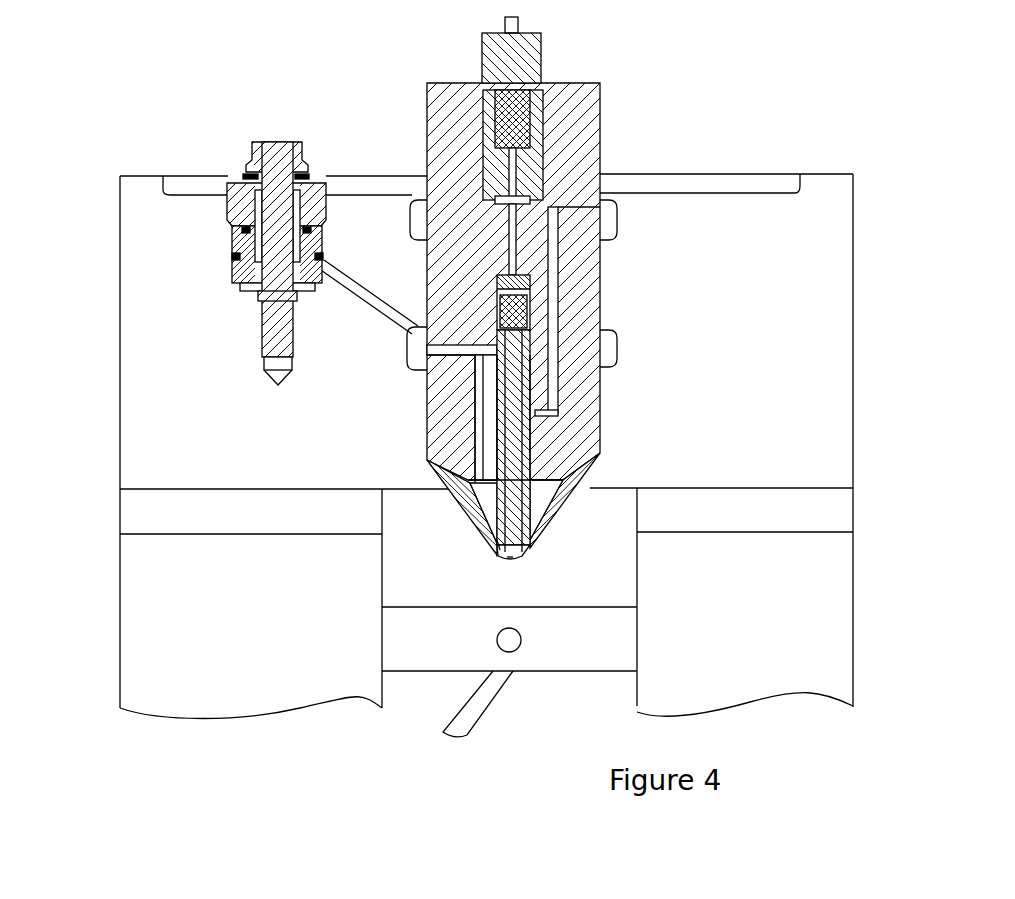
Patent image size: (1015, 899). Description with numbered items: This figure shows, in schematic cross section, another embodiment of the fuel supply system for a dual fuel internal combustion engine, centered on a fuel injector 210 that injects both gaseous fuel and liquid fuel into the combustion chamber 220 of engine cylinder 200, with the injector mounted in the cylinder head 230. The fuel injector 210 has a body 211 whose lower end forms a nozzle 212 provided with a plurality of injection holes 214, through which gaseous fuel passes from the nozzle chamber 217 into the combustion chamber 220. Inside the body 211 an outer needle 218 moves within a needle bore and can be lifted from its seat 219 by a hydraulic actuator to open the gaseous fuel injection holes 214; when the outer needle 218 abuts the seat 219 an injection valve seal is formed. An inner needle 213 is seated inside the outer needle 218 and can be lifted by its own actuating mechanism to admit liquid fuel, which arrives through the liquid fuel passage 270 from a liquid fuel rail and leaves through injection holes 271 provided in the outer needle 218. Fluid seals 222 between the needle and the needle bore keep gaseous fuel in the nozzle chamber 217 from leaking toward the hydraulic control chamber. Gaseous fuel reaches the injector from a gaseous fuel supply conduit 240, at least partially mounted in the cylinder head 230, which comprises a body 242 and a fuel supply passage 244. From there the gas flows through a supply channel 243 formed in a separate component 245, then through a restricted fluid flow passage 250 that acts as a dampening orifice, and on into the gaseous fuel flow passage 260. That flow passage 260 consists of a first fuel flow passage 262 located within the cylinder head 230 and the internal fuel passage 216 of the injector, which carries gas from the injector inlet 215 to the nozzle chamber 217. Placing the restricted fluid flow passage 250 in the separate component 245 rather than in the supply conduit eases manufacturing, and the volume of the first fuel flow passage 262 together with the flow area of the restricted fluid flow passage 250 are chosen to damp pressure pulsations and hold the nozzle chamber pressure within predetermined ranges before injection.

The engine cylinder 200 is at (855, 650).
The fuel injector 210 is at (513, 373).
The body 211 is at (600, 145).
The nozzle 212 is at (559, 505).
The inner needle 213 is at (600, 257).
The injection holes 214 is at (497, 545).
The injector inlet 215 is at (427, 352).
The internal fuel passage 216 is at (475, 398).
The nozzle chamber 217 is at (490, 492).
The outer needle 218 is at (565, 430).
The seat 219 is at (531, 533).
The combustion chamber 220 is at (580, 572).
The fluid seals 222 is at (565, 452).
The cylinder head 230 is at (805, 305).
The gaseous fuel supply conduit 240 is at (189, 232).
The body 242 is at (230, 183).
The supply channel 243 is at (233, 252).
The fuel supply passage 244 is at (228, 207).
The separate component 245 is at (243, 272).
The restricted fluid flow passage 250 is at (300, 178).
The gaseous fuel flow passage 260 is at (395, 342).
The first fuel flow passage 262 is at (353, 303).
The liquid fuel passage 270 is at (547, 290).
The injection holes 271 is at (508, 558).